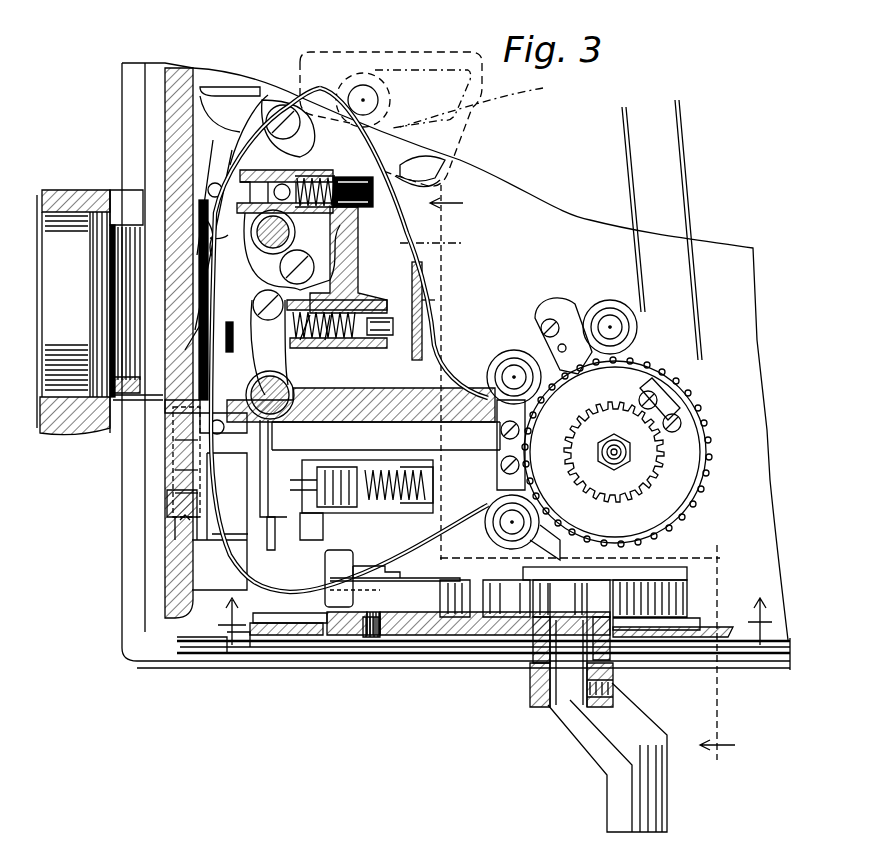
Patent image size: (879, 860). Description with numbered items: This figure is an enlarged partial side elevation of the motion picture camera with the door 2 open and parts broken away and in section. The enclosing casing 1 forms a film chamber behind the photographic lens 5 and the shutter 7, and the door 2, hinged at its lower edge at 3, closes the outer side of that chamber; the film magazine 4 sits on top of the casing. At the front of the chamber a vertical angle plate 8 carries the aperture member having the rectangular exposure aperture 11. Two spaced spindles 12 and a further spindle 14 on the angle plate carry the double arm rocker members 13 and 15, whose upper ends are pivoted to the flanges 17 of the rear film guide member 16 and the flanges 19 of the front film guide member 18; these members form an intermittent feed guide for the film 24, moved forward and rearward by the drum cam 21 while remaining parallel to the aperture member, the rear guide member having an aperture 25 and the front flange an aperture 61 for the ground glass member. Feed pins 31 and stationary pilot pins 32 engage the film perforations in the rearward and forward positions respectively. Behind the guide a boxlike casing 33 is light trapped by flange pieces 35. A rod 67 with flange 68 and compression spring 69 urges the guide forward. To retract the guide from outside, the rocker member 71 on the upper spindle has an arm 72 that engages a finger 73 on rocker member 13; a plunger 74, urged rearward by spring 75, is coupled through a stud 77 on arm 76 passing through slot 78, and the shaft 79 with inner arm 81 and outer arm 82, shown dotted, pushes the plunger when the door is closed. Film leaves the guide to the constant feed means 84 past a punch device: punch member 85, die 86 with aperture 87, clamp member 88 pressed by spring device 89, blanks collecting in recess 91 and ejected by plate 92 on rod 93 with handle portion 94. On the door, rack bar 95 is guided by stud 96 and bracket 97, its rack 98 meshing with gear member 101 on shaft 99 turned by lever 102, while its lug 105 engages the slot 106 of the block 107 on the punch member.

The enclosing casing 1 is at (727, 255).
The door 2 is at (712, 642).
The hinge 3 is at (730, 640).
The film magazine 4 is at (492, 620).
The photographic lens 5 is at (582, 477).
The shutter 7 is at (148, 227).
The angle plate 8 is at (176, 176).
The exposure aperture 11 is at (213, 253).
The spindles 12 is at (363, 362).
The rocker member 13 is at (417, 440).
The spindle 14 is at (170, 430).
The rocker member 15 is at (167, 407).
The rear film guide member 16 is at (198, 343).
The flanges 17 is at (246, 130).
The front film guide member 18 is at (203, 203).
The flanges 19 is at (200, 213).
The drum cam 21 is at (270, 322).
The film 24 is at (322, 130).
The aperture 25 is at (210, 280).
The feed pins 31 is at (253, 370).
The stationary pilot pins 32 is at (251, 236).
The boxlike enclosing casing 33 is at (440, 243).
The flange pieces 35 is at (285, 124).
The aperture 61 is at (210, 252).
The rod 67 is at (440, 325).
The flange 68 is at (406, 311).
The coiled compression spring 69 is at (422, 300).
The rocker member 71 is at (355, 220).
The arm 72 is at (343, 260).
The finger 73 is at (367, 283).
The plunger 74 is at (420, 172).
The coiled compression spring 75 is at (421, 162).
The arm 76 is at (378, 192).
The stud 77 is at (318, 172).
The slot 78 is at (283, 130).
The shaft 79 is at (368, 97).
The arm 81 is at (490, 102).
The arm 82 is at (437, 80).
The constant feed means 84 is at (687, 437).
The punch member 85 is at (458, 376).
The die 86 is at (180, 517).
The aperture 87 is at (173, 503).
The clamp member 88 is at (270, 550).
The spring device 89 is at (392, 498).
The recess 91 is at (173, 493).
The ejector plate 92 is at (170, 470).
The rod 93 is at (167, 463).
The bent portion 94 is at (226, 338).
The rack bar 95 is at (453, 603).
The headed stud 96 is at (380, 580).
The bracket 97 is at (650, 573).
The gear tooth rack 98 is at (667, 597).
The shaft 99 is at (573, 690).
The gear member 101 is at (627, 600).
The lever 102 is at (643, 760).
The lug 105 is at (352, 578).
The slot 106 is at (335, 508).
The block 107 is at (308, 532).